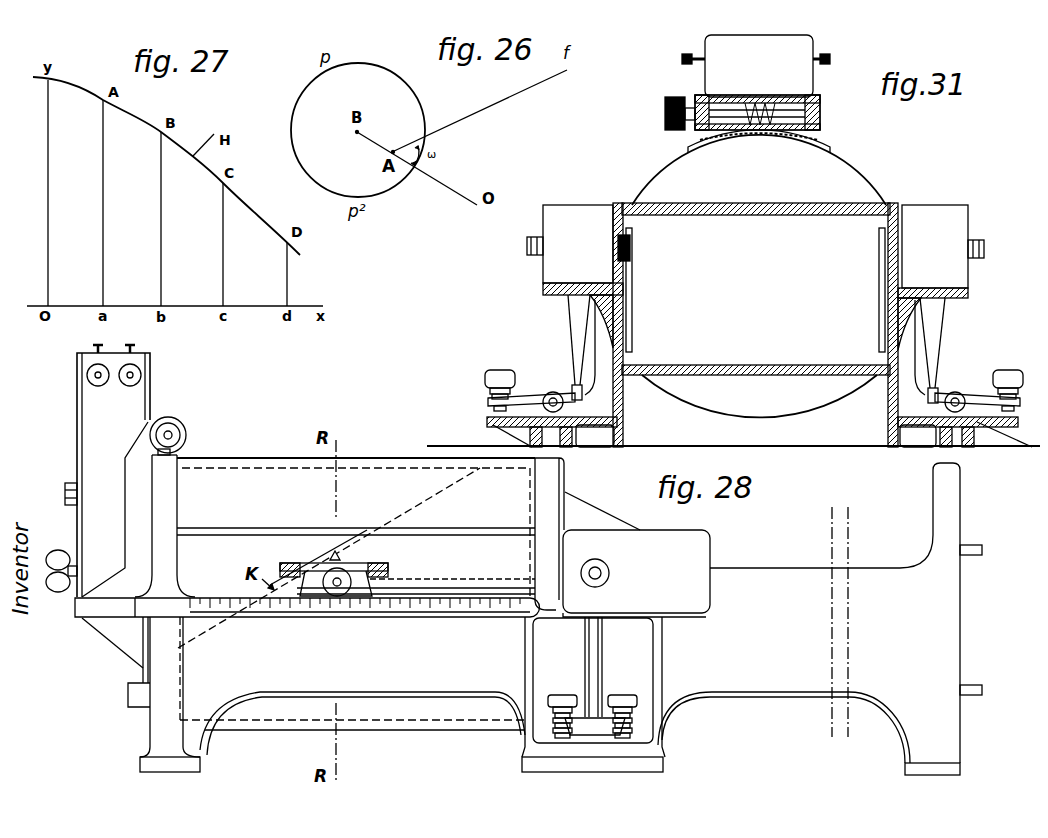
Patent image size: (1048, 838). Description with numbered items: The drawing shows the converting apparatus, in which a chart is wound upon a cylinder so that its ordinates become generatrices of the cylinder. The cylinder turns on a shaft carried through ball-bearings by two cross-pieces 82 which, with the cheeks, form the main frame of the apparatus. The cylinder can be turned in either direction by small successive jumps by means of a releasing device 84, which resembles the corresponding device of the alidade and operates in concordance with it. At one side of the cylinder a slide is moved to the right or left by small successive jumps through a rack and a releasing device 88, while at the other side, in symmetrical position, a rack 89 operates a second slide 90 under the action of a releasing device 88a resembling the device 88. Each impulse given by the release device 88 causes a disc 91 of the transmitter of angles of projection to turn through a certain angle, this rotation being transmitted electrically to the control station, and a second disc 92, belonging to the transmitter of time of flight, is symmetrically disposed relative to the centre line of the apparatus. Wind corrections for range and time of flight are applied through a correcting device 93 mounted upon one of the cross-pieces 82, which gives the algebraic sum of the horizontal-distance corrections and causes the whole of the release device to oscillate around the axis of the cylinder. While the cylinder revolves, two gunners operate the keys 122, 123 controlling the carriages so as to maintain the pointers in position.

In FIG. 28, the cross-pieces 82 is at (166, 561).
In FIG. 31, the releasing device 84 is at (756, 66).
In FIG. 28, the releasing device 84 is at (97, 420).
In FIG. 31, the releasing device 88 is at (941, 251).
In FIG. 31, the releasing device 88a is at (575, 250).
In FIG. 28, the releasing device 88a is at (683, 538).
In FIG. 31, the rack 89 is at (626, 262).
In FIG. 28, the rack 89 is at (458, 590).
In FIG. 28, the second slide 90 is at (355, 570).
In FIG. 31, the disc 91 is at (878, 332).
In FIG. 31, the disc 92 is at (633, 318).
In FIG. 28, the correcting device 93 is at (180, 423).
In FIG. 31, the key 122 is at (1008, 372).
In FIG. 31, the key 123 is at (505, 362).
In FIG. 28, the key 123 is at (617, 696).